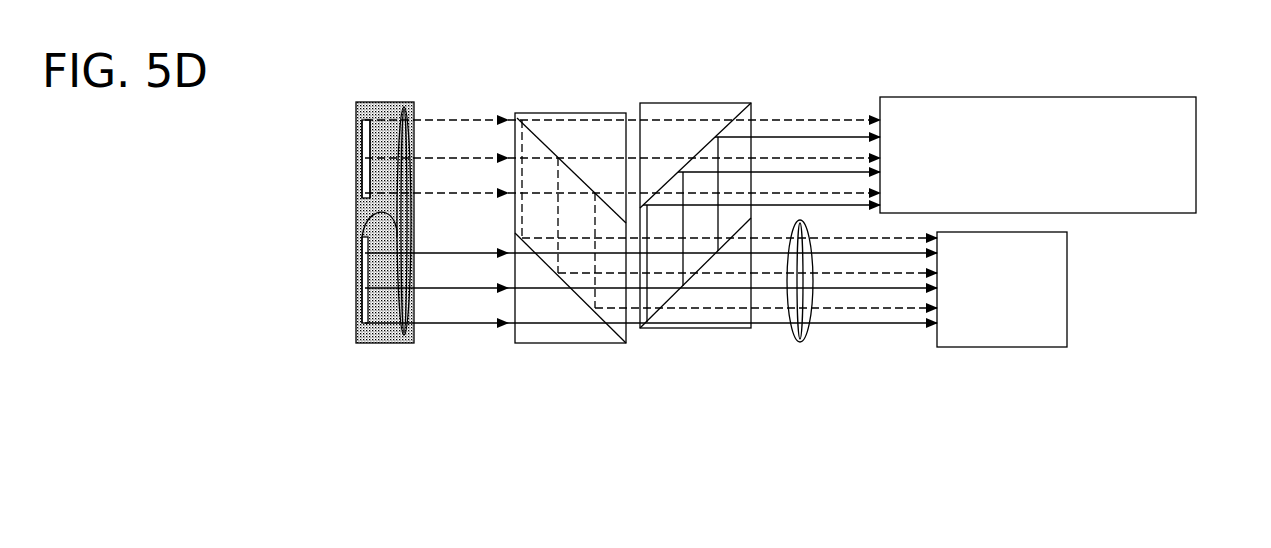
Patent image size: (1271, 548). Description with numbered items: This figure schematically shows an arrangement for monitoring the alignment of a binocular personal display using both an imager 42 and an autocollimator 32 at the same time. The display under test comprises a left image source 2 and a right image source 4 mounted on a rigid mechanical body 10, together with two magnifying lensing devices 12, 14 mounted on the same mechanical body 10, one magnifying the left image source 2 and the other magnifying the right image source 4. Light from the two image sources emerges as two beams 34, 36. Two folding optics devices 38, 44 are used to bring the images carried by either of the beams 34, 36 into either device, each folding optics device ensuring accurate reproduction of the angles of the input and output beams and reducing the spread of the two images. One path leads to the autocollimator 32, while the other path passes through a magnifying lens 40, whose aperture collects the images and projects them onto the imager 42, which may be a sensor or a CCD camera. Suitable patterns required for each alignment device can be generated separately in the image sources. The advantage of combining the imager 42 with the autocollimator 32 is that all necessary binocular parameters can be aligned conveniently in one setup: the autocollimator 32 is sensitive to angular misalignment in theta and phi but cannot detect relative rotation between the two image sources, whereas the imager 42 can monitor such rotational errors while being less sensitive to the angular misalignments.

The left image source 2 is at (355, 101).
The right image source 4 is at (358, 237).
The mechanical body 10 is at (378, 345).
The left magnifying lensing device 12 is at (400, 108).
The right magnifying lensing device 14 is at (360, 225).
The autocollimator 32 is at (1040, 97).
The first beam 34 is at (458, 120).
The second beam 36 is at (473, 335).
The first folding optics device 38 is at (572, 113).
The magnifying lens 40 is at (800, 343).
The imager 42 is at (985, 348).
The second folding optics device 44 is at (695, 103).